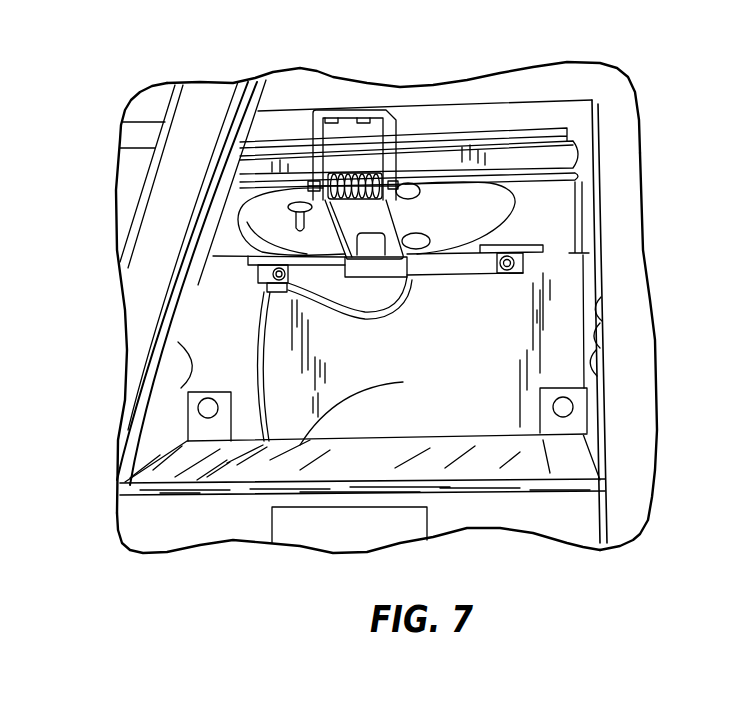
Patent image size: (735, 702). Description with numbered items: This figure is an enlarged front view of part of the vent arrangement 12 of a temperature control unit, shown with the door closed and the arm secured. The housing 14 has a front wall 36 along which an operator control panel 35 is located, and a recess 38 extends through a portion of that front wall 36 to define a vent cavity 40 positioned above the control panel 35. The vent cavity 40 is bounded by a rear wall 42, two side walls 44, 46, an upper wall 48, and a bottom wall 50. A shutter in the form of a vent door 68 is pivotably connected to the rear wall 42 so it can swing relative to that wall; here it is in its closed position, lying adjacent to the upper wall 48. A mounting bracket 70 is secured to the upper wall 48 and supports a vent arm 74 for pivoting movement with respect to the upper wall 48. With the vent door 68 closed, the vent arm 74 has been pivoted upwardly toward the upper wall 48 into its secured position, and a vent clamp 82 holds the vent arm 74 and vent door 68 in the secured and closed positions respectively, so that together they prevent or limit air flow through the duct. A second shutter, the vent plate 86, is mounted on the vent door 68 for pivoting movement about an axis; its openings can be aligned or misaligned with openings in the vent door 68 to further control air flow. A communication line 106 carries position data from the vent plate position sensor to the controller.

The vent arrangement 12 is at (572, 415).
The housing 14 is at (617, 264).
The operator control panel 35 is at (557, 520).
The front wall 36 is at (540, 84).
The recess 38 is at (601, 313).
The vent cavity 40 is at (597, 377).
The rear wall 42 is at (300, 445).
The side wall 44 is at (190, 385).
The side wall 46 is at (600, 347).
The upper wall 48 is at (433, 119).
The bottom wall 50 is at (345, 473).
The vent door 68 is at (570, 223).
The mounting bracket 70 is at (327, 118).
The vent arm 74 is at (345, 256).
The vent clamp 82 is at (418, 287).
The vent plate 86 is at (492, 202).
The communication line 106 is at (377, 320).